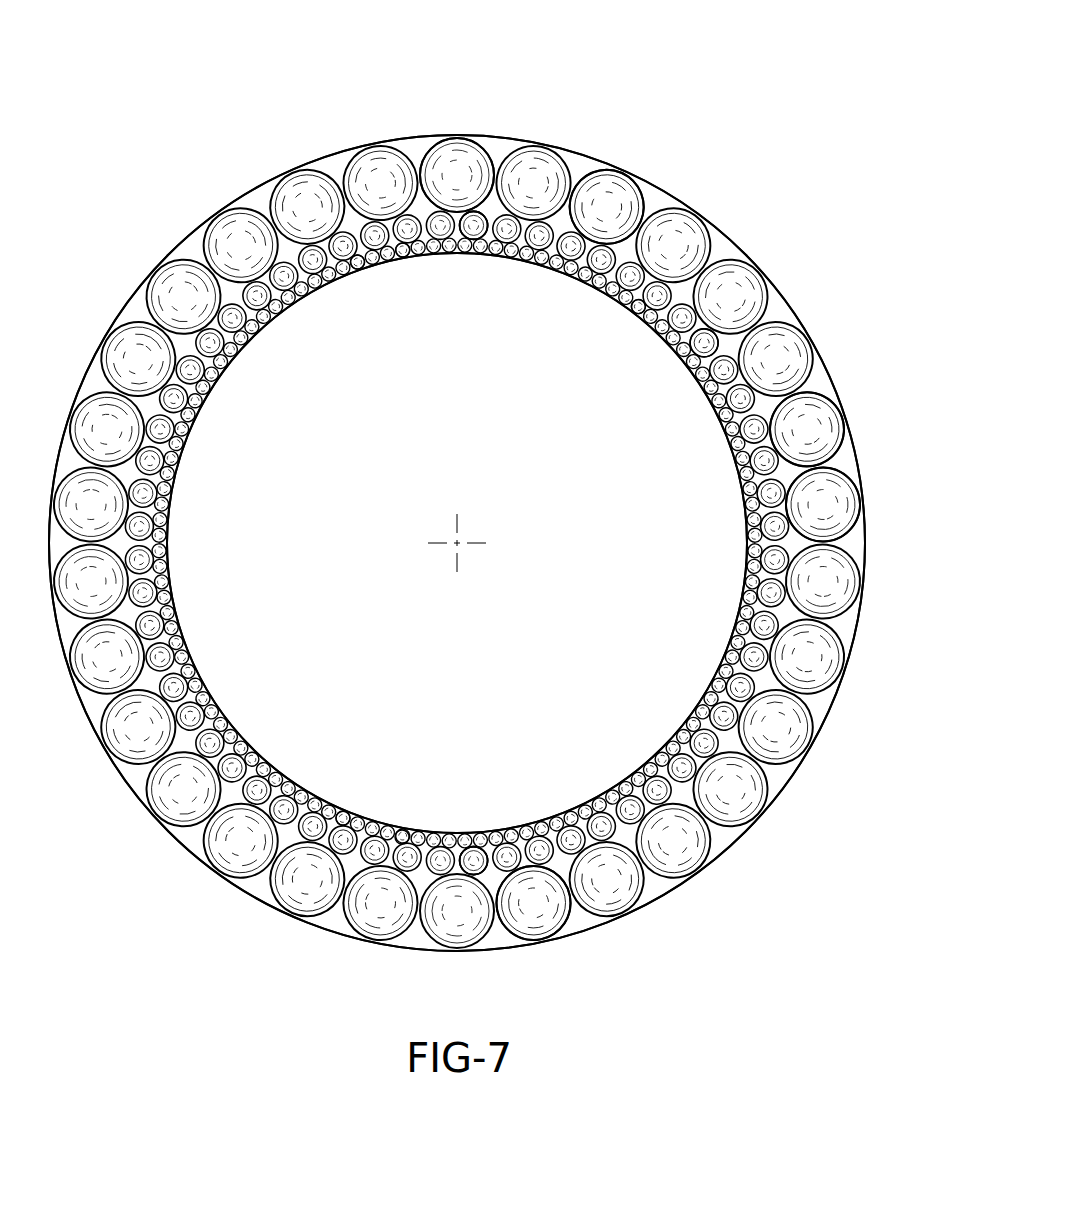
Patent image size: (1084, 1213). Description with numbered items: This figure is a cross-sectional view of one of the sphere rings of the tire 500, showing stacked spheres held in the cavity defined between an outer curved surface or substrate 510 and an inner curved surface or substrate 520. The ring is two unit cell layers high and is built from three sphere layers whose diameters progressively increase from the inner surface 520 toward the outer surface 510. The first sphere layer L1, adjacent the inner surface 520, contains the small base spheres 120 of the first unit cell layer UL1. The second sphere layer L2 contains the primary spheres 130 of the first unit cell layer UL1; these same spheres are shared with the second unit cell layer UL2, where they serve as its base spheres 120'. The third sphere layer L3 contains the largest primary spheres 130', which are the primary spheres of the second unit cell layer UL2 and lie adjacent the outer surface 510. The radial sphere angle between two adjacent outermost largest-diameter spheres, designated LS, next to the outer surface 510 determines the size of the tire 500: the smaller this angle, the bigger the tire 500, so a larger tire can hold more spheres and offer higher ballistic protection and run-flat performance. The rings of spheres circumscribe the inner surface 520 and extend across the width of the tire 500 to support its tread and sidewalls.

The tire 500 is at (719, 106).
The outer curved surface or substrate 510 is at (737, 841).
The inner curved surface or substrate 520 is at (691, 708).
The primary spheres 130' is at (505, 534).
The primary spheres 130 is at (456, 542).
The base spheres 120' is at (474, 542).
The base spheres 120 is at (373, 543).
The first sphere layer L1 is at (640, 309).
The second sphere layer L2 is at (703, 341).
The third sphere layer L3 is at (612, 192).
The outermost largest diameter spheres LS is at (819, 507).
The first unit cell layer UL1 is at (493, 208).
The second unit cell layer UL2 is at (470, 242).